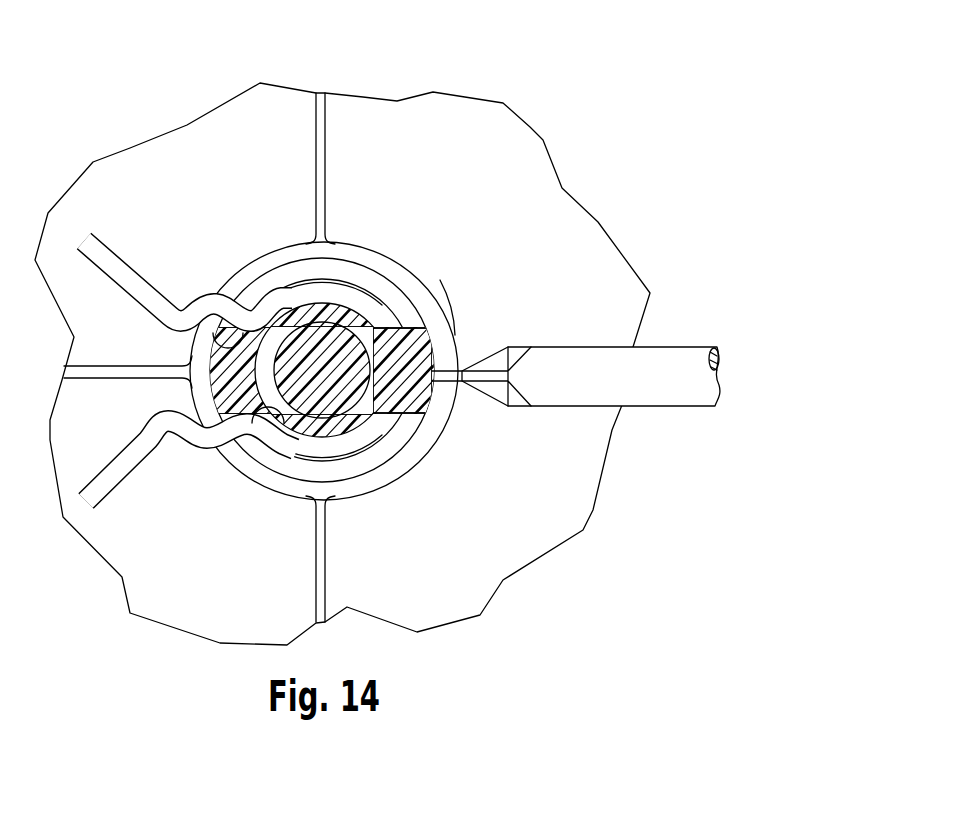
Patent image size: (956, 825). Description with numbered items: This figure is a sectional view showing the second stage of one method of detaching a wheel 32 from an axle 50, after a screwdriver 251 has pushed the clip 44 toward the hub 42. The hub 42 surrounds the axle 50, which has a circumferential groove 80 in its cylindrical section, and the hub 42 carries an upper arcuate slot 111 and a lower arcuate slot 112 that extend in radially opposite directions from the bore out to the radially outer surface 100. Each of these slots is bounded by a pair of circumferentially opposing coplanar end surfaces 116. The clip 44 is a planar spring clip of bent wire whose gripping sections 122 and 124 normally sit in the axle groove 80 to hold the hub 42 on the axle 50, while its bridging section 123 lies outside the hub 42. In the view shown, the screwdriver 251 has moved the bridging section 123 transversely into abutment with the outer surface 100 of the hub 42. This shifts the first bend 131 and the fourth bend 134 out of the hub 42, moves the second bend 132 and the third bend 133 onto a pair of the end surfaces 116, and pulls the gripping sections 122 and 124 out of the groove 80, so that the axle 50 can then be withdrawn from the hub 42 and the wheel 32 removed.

The wheel 32 is at (499, 160).
The hub 42 is at (297, 496).
The clip 44 is at (419, 267).
The axle 50 is at (295, 428).
The groove 80 is at (292, 298).
The radially outer surface 100 is at (440, 402).
The upper arcuate slot 111 is at (344, 259).
The lower arcuate slot 112 is at (331, 484).
The end surfaces 116 is at (426, 312).
The second section 122 is at (184, 294).
The bridging section 123 is at (453, 339).
The fourth section 124 is at (203, 448).
The first bend 131 is at (162, 337).
The second bend 132 is at (215, 336).
The third bend 133 is at (265, 440).
The fourth bend 134 is at (152, 407).
The screwdriver 251 is at (678, 347).